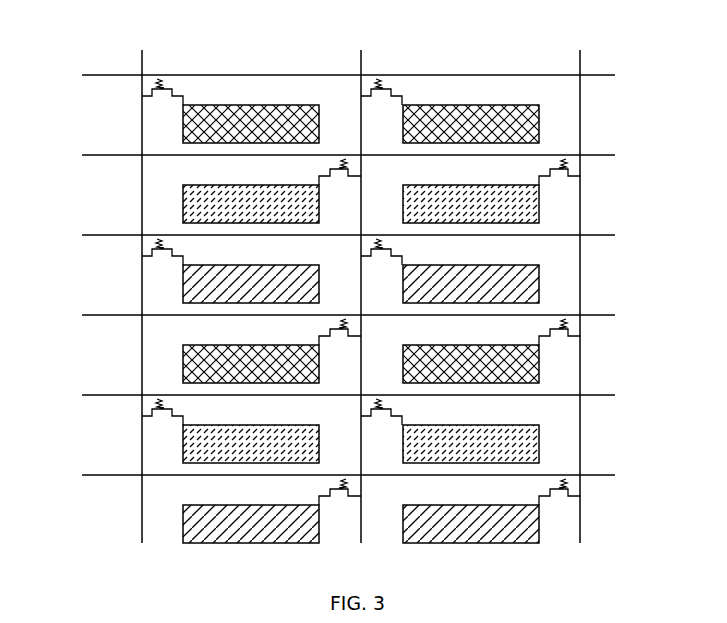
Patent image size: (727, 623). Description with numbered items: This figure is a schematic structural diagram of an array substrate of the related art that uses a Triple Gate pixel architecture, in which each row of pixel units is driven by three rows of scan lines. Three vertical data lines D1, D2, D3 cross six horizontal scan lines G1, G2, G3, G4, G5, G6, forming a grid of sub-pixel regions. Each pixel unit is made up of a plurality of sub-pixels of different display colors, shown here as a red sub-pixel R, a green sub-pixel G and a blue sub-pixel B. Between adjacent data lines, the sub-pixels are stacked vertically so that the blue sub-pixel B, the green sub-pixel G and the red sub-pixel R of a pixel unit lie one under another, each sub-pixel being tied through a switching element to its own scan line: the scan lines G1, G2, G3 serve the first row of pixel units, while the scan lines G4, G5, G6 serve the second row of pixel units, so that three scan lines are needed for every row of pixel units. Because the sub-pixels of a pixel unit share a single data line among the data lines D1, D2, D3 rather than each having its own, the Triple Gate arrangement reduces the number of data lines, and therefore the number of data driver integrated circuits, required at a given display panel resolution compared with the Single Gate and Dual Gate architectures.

The data line D1 is at (138, 271).
The data line D2 is at (358, 271).
The data line D3 is at (575, 271).
The scan line G1 is at (316, 75).
The scan line G2 is at (316, 155).
The scan line G3 is at (316, 235).
The scan line G4 is at (316, 315).
The scan line G5 is at (316, 395).
The scan line G6 is at (316, 475).
The blue sub-pixel B is at (539, 120).
The green sub-pixel G is at (539, 198).
The red sub-pixel R is at (539, 280).